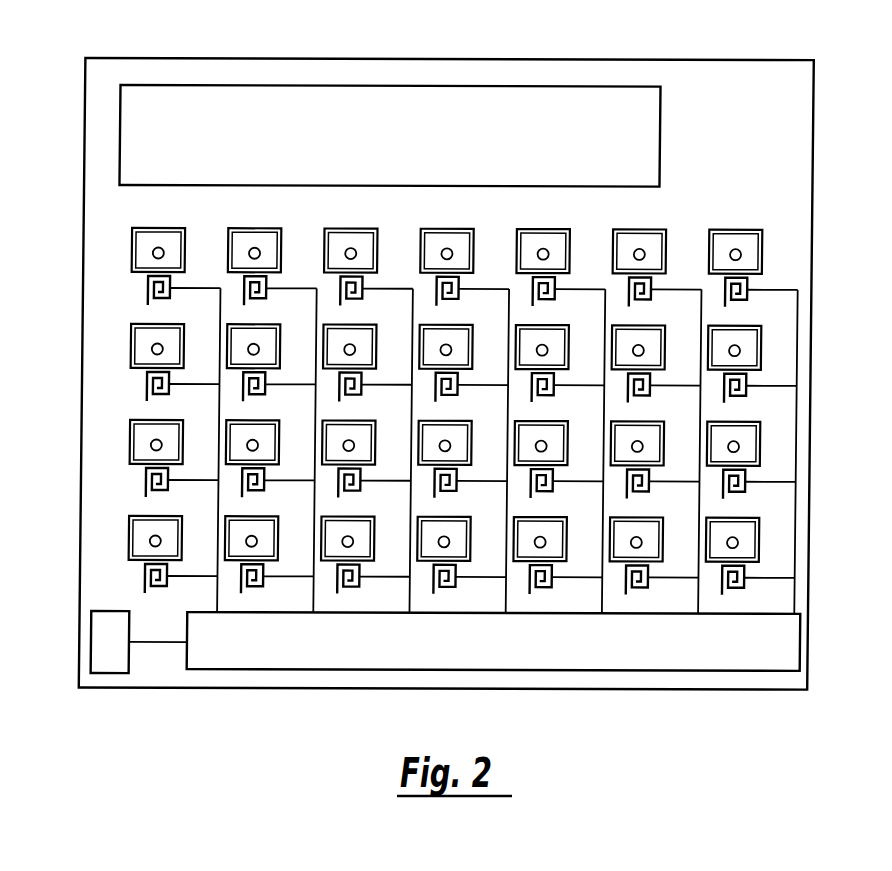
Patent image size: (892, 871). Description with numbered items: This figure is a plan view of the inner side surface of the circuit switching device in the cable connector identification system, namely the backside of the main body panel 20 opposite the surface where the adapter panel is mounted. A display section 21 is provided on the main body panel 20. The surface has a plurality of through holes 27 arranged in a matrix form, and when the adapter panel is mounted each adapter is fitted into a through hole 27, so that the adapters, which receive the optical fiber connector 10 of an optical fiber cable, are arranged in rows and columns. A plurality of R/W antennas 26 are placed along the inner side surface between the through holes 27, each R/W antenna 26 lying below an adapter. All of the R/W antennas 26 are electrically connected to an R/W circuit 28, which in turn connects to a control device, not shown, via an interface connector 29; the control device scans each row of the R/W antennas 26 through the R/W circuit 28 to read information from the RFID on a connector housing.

The main body panel 20 is at (278, 68).
The display section 21 is at (131, 116).
The optical fiber connector 10 is at (140, 242).
The R/W antenna 26 is at (151, 386).
The through hole 27 is at (767, 251).
The R/W circuit 28 is at (627, 657).
The interface connector 29 is at (112, 665).